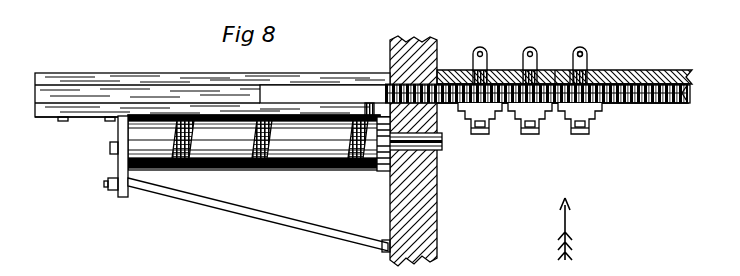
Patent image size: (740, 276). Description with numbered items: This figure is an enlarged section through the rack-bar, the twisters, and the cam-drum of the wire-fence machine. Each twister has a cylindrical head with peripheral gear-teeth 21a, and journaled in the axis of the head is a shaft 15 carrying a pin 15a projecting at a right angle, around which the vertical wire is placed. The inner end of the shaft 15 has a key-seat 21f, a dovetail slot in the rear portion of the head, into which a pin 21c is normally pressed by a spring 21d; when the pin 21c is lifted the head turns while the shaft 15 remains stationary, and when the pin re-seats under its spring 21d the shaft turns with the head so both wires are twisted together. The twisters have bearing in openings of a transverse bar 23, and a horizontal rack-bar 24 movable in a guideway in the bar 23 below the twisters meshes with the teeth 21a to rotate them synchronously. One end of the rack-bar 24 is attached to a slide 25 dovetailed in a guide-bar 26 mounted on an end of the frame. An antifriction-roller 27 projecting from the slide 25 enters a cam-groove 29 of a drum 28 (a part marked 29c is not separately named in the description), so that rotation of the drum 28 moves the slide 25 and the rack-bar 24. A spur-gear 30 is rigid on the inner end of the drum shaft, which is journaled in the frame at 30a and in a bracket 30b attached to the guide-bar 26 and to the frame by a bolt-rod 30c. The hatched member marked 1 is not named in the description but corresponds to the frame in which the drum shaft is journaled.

The wall 1 is at (413, 151).
The shaft 15 is at (540, 65).
The pin 15a is at (580, 51).
The peripheral gear-teeth 21a is at (558, 70).
The pin 21c is at (523, 128).
The spring 21d is at (576, 130).
The key-seat 21f is at (471, 122).
The transverse bar 23 is at (633, 75).
The rack-bar 24 is at (448, 78).
The slide 25 is at (475, 93).
The guide-bar 26 is at (306, 80).
The antifriction-roller 27 is at (360, 108).
The cam-drum 28 is at (254, 142).
The cam-groove 29 is at (355, 168).
The cylinder ring 29c is at (274, 143).
The spur-gear 30 is at (388, 172).
The frame journal 30a is at (438, 147).
The bracket 30b is at (118, 162).
The bolt-rod 30c is at (192, 197).